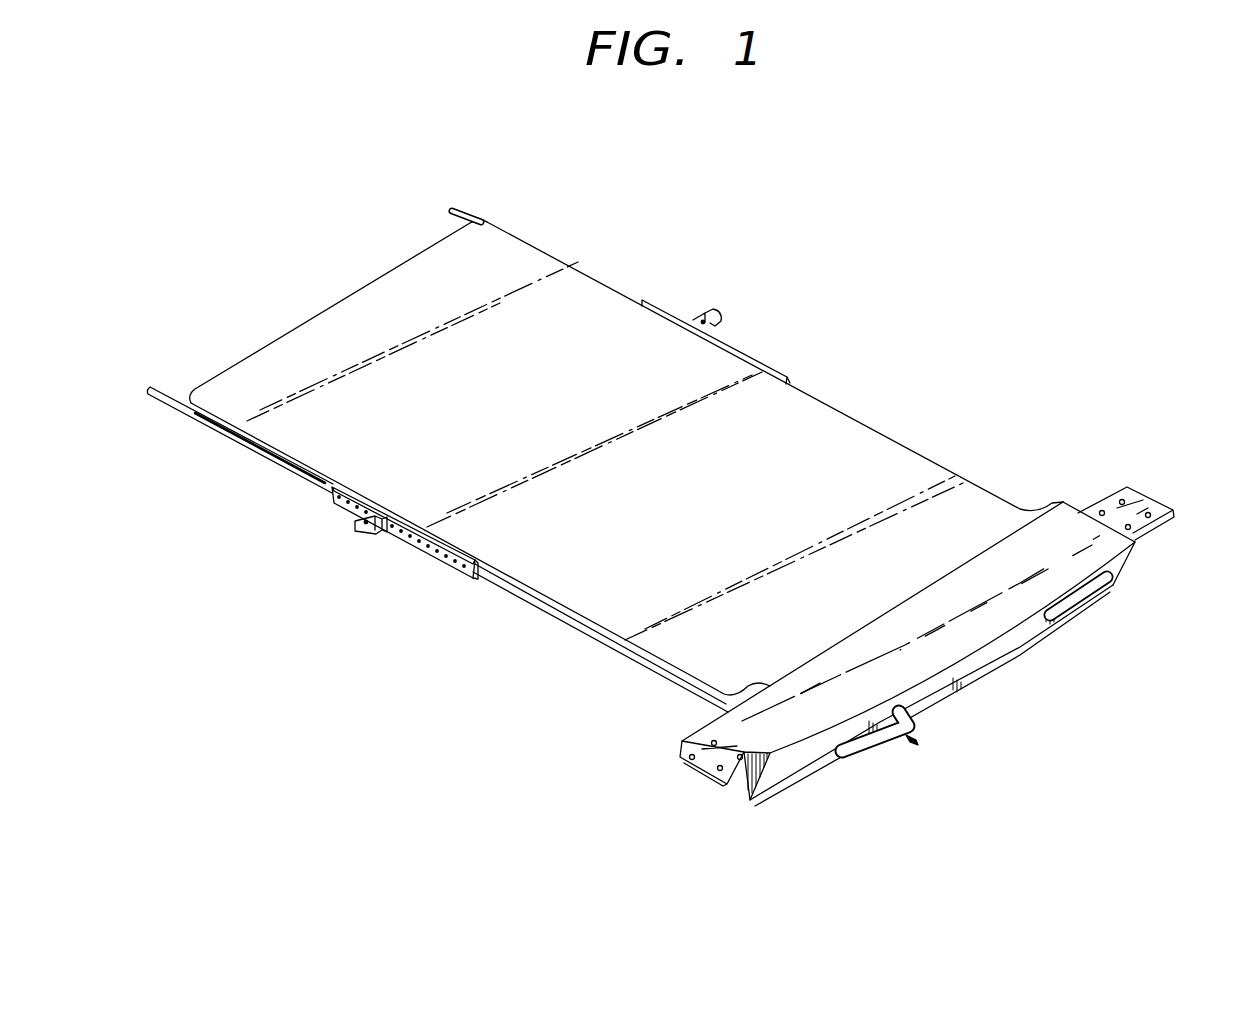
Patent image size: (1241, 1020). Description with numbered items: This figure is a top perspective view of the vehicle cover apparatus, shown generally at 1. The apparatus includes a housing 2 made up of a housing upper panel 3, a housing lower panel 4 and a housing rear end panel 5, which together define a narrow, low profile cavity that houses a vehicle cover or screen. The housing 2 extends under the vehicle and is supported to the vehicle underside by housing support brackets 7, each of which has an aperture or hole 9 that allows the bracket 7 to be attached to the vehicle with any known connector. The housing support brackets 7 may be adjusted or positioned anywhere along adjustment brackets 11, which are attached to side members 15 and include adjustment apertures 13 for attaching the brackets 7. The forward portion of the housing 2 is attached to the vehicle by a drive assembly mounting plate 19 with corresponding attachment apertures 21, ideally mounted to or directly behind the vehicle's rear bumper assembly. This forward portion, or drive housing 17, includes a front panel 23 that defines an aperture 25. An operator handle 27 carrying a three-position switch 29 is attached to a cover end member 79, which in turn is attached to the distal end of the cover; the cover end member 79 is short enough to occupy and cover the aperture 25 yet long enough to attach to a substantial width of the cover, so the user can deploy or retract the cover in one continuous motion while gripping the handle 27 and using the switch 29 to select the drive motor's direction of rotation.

The present invention 1 is at (697, 190).
The housing 2 is at (527, 220).
The housing upper panel 3 is at (623, 457).
The housing lower panel 4 is at (562, 670).
The housing rear end panel 5 is at (315, 295).
The housing support bracket 7 is at (707, 310).
The aperture 9 is at (717, 328).
The adjustment bracket 11 is at (382, 555).
The adjustment aperture 13 is at (430, 558).
The side member 15 is at (462, 208).
The drive housing 17 is at (1068, 537).
The drive assembly mounting plate 19 is at (680, 740).
The attachment aperture 21 is at (721, 773).
The front panel 23 is at (792, 792).
The aperture 25 is at (995, 672).
The operator handle 27 is at (888, 777).
The three-position switch 29 is at (928, 755).
The cover end member 79 is at (1075, 603).